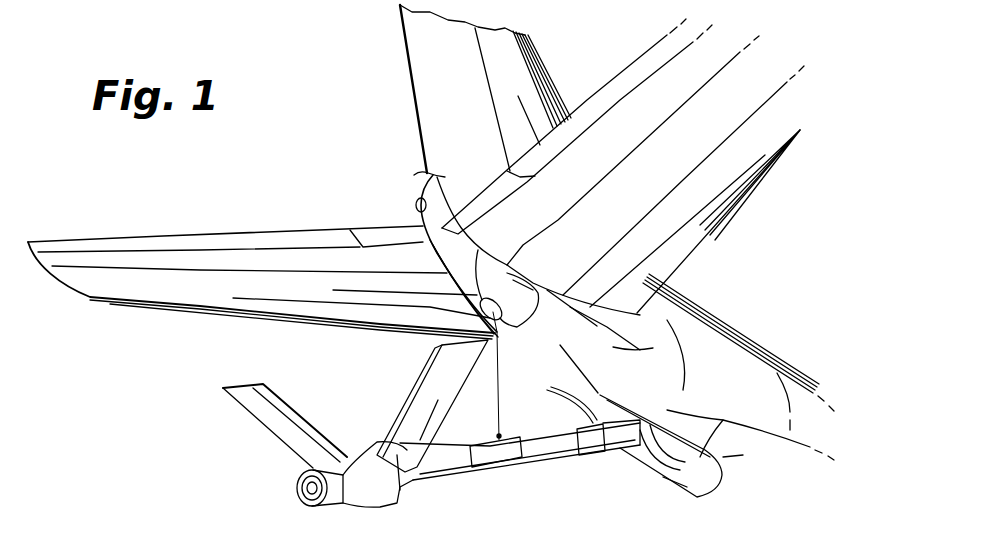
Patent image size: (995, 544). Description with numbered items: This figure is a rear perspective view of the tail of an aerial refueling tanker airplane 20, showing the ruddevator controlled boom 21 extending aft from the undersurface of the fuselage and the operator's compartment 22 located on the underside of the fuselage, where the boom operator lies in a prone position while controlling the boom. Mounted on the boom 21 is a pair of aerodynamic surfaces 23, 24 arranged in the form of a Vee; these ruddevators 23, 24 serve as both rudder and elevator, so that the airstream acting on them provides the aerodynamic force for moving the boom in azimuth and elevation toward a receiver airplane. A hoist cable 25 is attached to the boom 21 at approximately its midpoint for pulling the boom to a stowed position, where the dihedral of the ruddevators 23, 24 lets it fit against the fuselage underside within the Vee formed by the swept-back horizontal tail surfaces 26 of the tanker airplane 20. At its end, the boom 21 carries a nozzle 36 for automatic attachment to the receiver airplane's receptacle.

The aerial refueling tanker airplane 20 is at (738, 326).
The ruddevator controlled boom 21 is at (526, 464).
The operator's compartment 22 is at (697, 477).
The aerodynamic surface (ruddevator) 23 is at (282, 402).
The aerodynamic surface (ruddevator) 24 is at (430, 362).
The hoist cable 25 is at (502, 402).
The swept-back horizontal tail surfaces 26 is at (155, 297).
The nozzle 36 is at (300, 490).